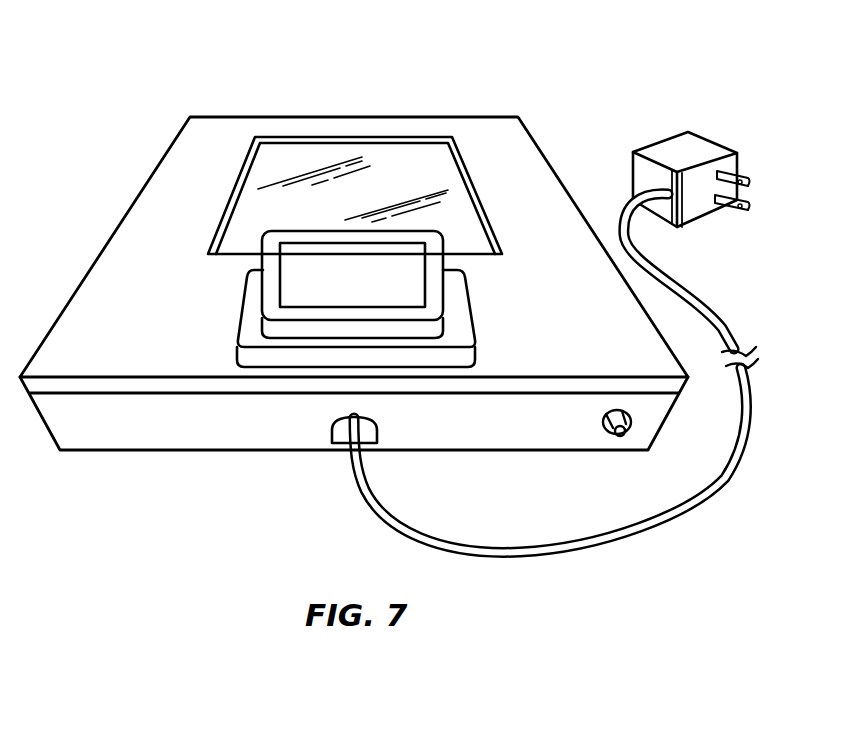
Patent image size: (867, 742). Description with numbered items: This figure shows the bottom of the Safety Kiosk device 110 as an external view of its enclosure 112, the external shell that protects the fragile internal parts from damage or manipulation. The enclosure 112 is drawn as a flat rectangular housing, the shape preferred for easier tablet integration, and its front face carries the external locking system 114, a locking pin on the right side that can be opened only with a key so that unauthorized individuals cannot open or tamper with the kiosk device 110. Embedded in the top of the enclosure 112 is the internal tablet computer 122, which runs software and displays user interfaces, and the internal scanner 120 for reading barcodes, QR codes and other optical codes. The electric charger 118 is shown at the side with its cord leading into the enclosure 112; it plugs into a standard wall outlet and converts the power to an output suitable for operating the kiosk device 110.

The kiosk device 110 is at (210, 88).
The enclosure 112 is at (140, 272).
The external locking system 114 is at (622, 440).
The electric charger 118 is at (718, 143).
The internal scanner 120 is at (333, 278).
The internal tablet computer 122 is at (277, 213).